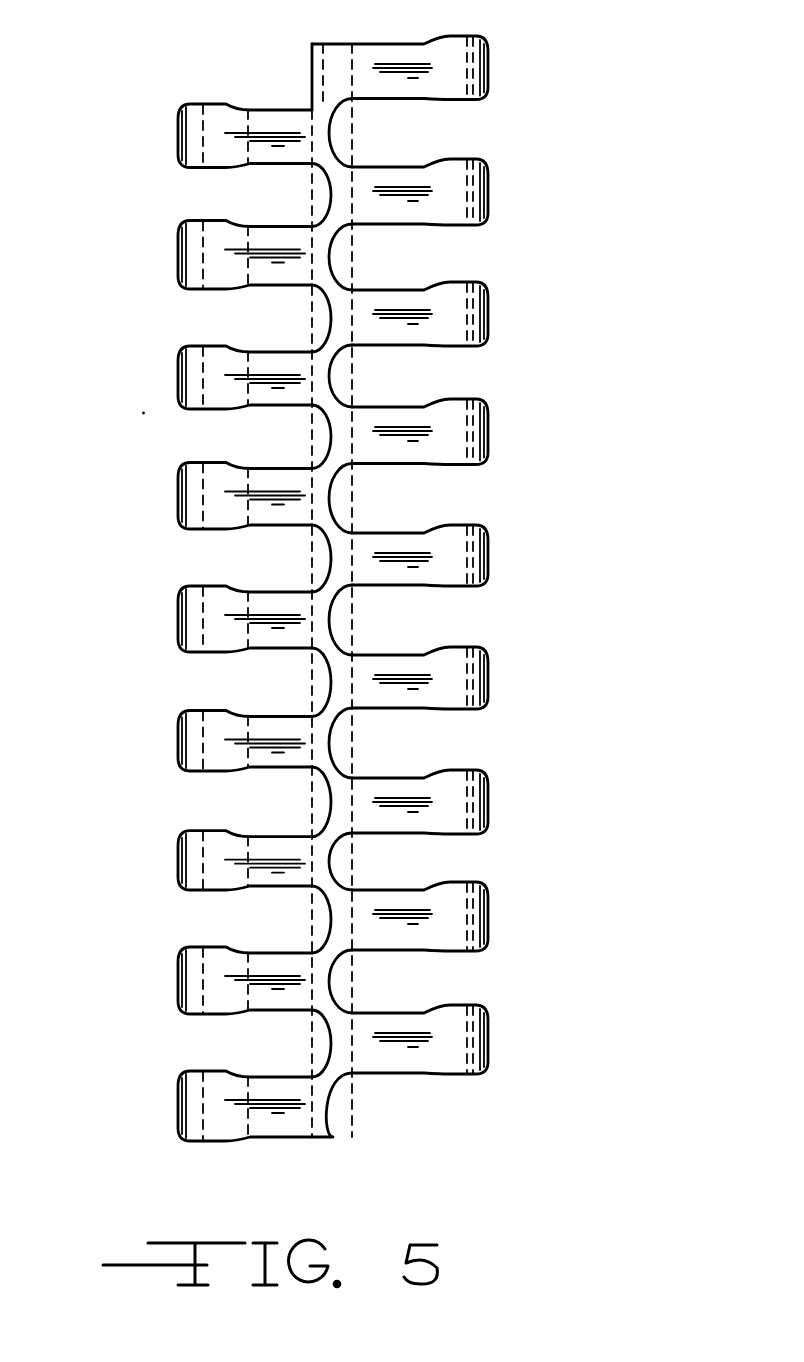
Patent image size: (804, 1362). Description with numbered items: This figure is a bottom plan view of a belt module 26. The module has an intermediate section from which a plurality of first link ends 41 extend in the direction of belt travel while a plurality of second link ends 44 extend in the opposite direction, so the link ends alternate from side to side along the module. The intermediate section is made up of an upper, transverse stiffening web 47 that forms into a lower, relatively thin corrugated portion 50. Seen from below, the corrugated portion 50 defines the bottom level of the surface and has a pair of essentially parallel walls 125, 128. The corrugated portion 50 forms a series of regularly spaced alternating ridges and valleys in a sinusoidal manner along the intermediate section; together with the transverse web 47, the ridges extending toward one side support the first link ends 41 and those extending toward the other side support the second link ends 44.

The belt module 26 is at (321, 574).
The first link ends 41 is at (446, 72).
The second link ends 44 is at (220, 129).
The transverse stiffening web 47 is at (320, 1043).
The corrugated portion 50 is at (325, 352).
The parallel wall 125 is at (317, 902).
The parallel wall 128 is at (345, 868).